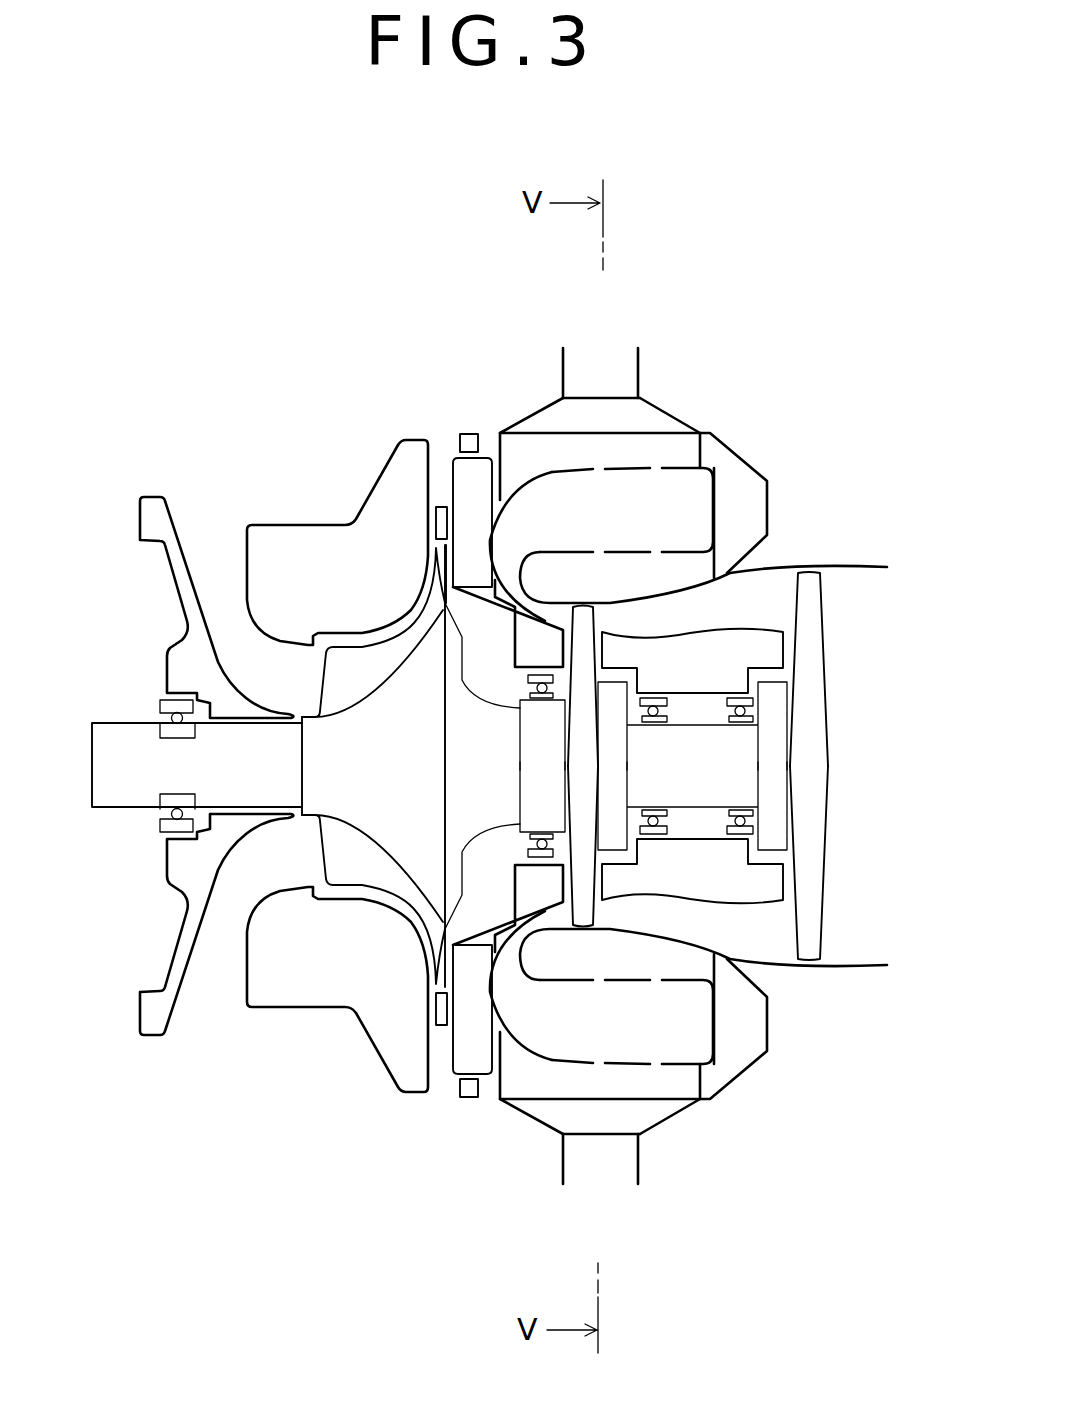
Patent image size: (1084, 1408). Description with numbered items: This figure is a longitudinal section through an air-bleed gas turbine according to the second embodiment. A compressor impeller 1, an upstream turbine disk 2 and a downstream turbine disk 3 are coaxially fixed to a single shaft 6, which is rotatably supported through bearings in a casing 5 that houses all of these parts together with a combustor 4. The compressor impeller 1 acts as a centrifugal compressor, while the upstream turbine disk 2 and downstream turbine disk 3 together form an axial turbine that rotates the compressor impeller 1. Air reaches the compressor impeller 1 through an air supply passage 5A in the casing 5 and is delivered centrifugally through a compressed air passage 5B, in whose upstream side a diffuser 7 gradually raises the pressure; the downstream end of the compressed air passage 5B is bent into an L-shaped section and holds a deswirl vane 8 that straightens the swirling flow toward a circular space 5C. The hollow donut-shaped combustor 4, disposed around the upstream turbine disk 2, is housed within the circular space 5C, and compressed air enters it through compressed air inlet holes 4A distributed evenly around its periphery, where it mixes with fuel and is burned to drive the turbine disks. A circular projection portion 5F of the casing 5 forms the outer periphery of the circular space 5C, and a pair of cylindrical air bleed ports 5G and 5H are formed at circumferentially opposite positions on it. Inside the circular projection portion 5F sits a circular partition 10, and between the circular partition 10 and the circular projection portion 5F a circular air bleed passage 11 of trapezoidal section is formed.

The compressor impeller 1 is at (305, 865).
The upstream turbine disk 2 is at (600, 760).
The downstream turbine disk 3 is at (830, 790).
The combustor 4 is at (737, 515).
The compressed air inlet holes 4A is at (703, 448).
The casing 5 is at (299, 500).
The air supply passage 5A is at (215, 590).
The compressed air passage 5B is at (440, 480).
The circular space 5C is at (737, 487).
The circular projection portion 5F is at (662, 410).
The air bleed port 5G is at (560, 372).
The air bleed port 5H is at (557, 1155).
The shaft 6 is at (118, 722).
The diffuser 7 is at (438, 505).
The deswirl vane 8 is at (458, 437).
The circular partition 10 is at (600, 420).
The circular air bleed passage 11 is at (587, 417).